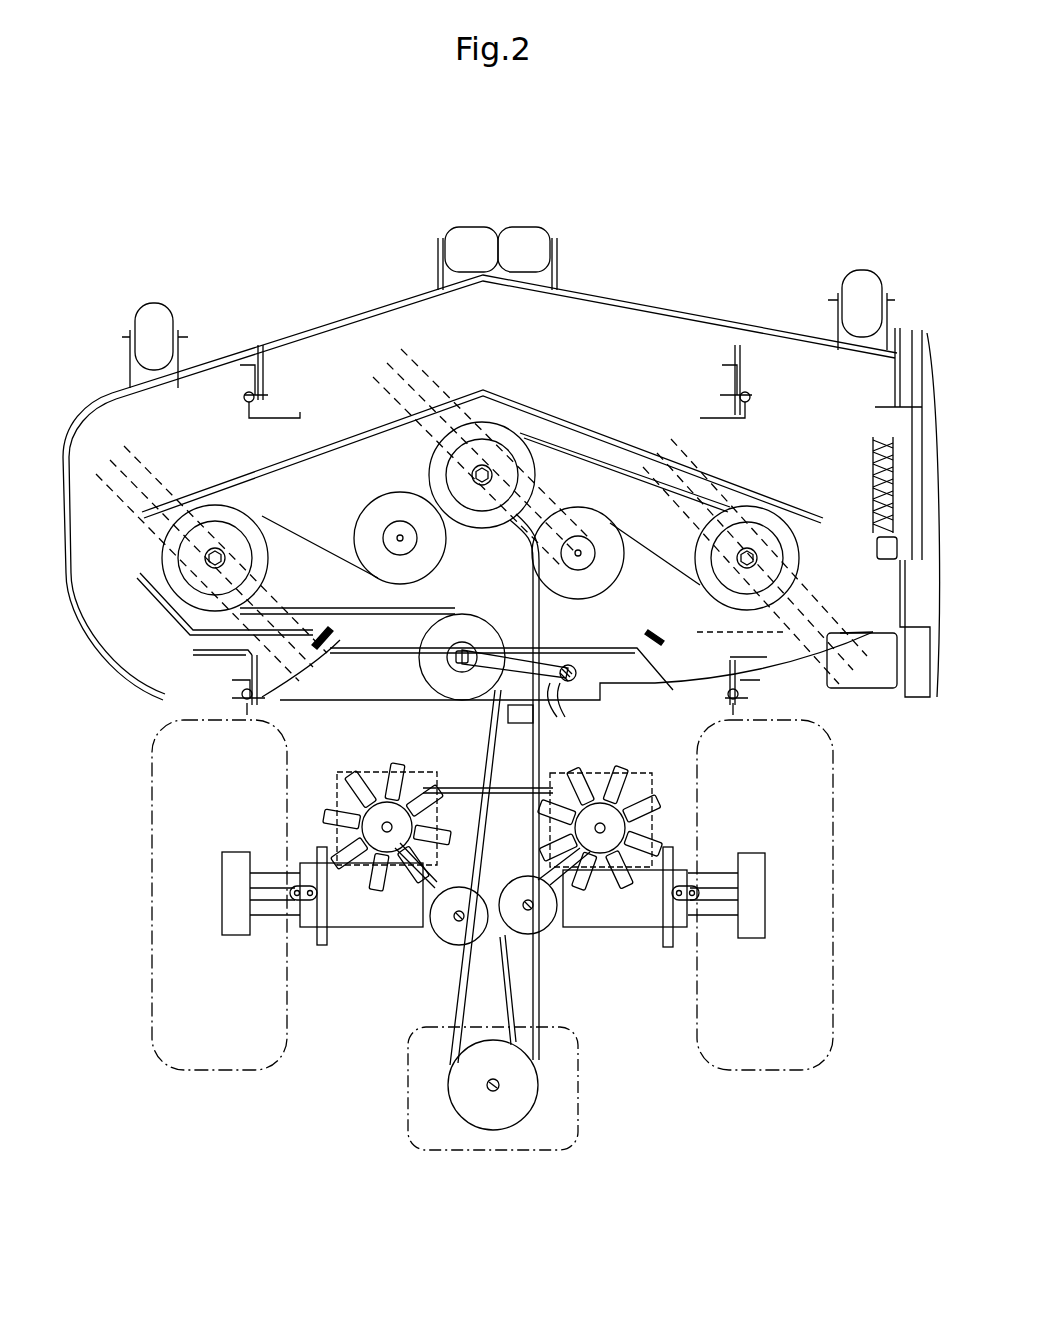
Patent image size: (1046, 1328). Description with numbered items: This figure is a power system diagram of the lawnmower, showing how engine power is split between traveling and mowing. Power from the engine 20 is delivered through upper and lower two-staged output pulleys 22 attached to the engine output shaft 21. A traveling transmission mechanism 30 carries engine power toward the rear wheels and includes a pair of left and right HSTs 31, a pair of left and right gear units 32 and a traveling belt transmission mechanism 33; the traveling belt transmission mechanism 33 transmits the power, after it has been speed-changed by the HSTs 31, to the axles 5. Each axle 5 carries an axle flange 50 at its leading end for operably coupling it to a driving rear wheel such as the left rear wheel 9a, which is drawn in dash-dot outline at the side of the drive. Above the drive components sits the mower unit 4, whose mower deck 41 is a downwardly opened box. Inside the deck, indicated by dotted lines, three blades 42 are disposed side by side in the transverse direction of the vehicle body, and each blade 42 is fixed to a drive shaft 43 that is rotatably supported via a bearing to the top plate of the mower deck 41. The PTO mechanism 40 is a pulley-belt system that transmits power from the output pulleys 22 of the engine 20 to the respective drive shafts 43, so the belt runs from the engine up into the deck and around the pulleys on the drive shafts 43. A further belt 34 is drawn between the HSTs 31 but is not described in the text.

The mower unit 4 is at (320, 318).
The mower deck 41 is at (655, 330).
The blade 42 is at (142, 475).
The drive shaft 43 is at (222, 552).
The PTO mechanism 40 is at (540, 748).
The engine 20 is at (498, 1150).
The engine output shaft 21 is at (486, 1085).
The output pulley 22 is at (520, 1090).
The traveling belt transmission mechanism 33 is at (670, 808).
The fan belt 34 is at (465, 790).
The traveling transmission mechanism 30 is at (432, 893).
The HST 31 is at (378, 770).
The gear unit 32 is at (355, 925).
The axle 5 is at (272, 872).
The axle flange 50 is at (233, 937).
The left rear wheel 9a is at (152, 900).